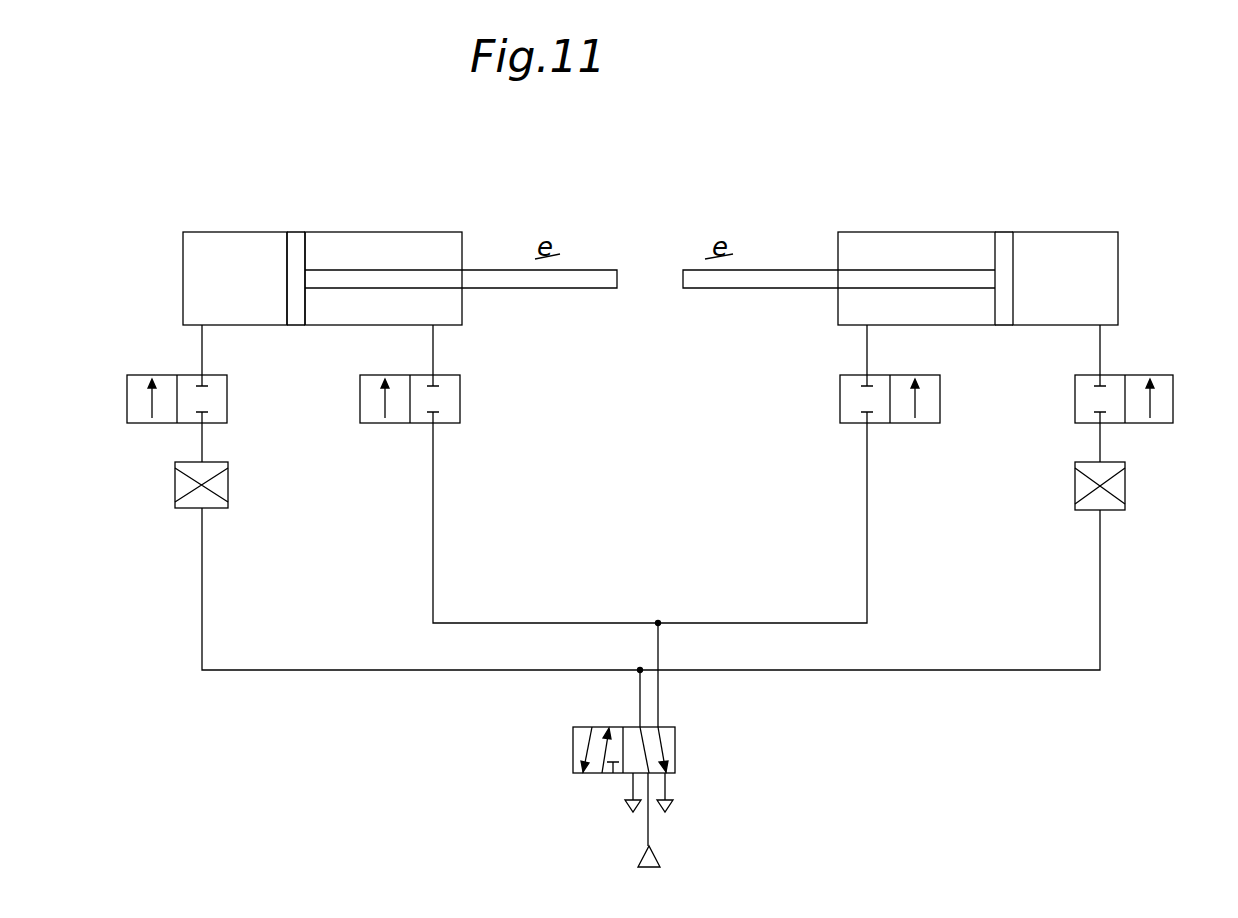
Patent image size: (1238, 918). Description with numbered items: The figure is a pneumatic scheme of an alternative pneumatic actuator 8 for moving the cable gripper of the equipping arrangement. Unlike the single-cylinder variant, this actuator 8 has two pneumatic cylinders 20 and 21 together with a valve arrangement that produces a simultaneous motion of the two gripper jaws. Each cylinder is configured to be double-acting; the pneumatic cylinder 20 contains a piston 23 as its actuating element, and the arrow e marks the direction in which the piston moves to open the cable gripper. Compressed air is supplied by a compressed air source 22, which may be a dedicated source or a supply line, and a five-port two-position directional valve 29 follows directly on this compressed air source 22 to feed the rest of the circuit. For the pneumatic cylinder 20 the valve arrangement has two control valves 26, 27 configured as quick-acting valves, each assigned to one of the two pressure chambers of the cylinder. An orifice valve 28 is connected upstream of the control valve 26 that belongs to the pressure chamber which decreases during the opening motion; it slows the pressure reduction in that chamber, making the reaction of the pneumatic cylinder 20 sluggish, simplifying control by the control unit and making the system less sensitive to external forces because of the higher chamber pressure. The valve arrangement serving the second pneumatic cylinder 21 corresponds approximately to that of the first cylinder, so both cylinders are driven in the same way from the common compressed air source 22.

The pneumatic actuator 8 is at (314, 124).
The pneumatic cylinder 20 is at (228, 232).
The pneumatic cylinder 21 is at (962, 232).
The compressed air source 22 is at (661, 862).
The piston 23 is at (298, 232).
The control valve 26 is at (126, 409).
The control valve 27 is at (460, 403).
The orifice valve 28 is at (175, 500).
The 5/2-way valve 29 is at (573, 765).